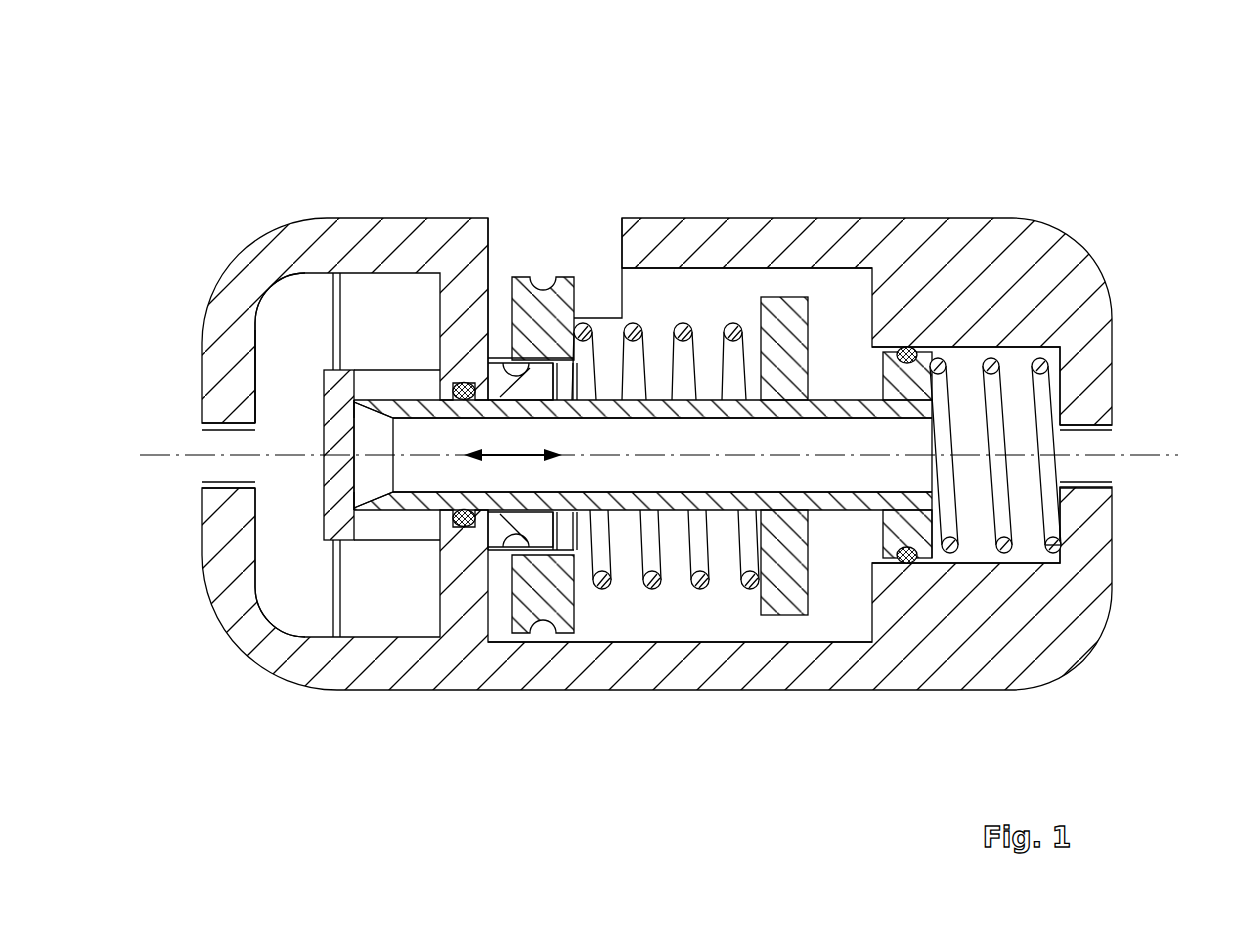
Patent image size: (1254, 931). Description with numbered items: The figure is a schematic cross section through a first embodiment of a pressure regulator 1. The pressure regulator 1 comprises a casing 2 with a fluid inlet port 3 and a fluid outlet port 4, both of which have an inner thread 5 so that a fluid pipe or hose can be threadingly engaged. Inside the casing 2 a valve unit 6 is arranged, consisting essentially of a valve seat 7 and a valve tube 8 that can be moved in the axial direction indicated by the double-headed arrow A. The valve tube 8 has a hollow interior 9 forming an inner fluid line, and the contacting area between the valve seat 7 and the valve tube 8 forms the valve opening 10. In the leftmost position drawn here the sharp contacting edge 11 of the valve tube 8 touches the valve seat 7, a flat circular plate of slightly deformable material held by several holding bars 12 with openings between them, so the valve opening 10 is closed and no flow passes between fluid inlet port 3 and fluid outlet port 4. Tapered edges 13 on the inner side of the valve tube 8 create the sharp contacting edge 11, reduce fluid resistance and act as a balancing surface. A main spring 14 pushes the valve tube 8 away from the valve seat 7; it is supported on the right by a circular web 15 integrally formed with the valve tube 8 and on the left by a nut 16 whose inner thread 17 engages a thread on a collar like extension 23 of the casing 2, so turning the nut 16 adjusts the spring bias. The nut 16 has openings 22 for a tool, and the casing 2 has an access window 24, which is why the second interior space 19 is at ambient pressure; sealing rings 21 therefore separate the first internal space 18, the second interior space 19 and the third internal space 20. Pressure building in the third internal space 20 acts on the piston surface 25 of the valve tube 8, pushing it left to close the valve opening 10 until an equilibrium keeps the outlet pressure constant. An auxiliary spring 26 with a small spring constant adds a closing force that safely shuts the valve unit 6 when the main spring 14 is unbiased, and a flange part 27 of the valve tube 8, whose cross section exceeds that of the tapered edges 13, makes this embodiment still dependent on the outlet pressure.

The pressure regulator 1 is at (1095, 216).
The casing 2 is at (1003, 213).
The fluid inlet port 3 is at (215, 445).
The fluid outlet port 4 is at (1100, 445).
The inner thread 5 is at (232, 483).
The valve unit 6 is at (308, 400).
The valve seat 7 is at (321, 378).
The valve tube 8 is at (842, 516).
The hollow interior 9 is at (844, 450).
The valve opening 10 is at (372, 376).
The contacting edge 11 is at (388, 508).
The holding bars 12 is at (333, 318).
The tapered edges 13 is at (356, 517).
The main spring 14 is at (598, 590).
The circular web 15 is at (780, 296).
The nut 16 is at (568, 271).
The inner thread 17 is at (500, 358).
The first internal space 18 is at (307, 576).
The second interior space 19 is at (687, 626).
The third internal space 20 is at (981, 421).
The sealing rings 21 is at (906, 346).
The openings 22 is at (539, 277).
The collar like extension 23 is at (510, 535).
The access window 24 is at (553, 243).
The piston surface 25 is at (944, 550).
The auxiliary spring 26 is at (1010, 552).
The flange part 27 is at (890, 380).
The axial direction A is at (519, 462).